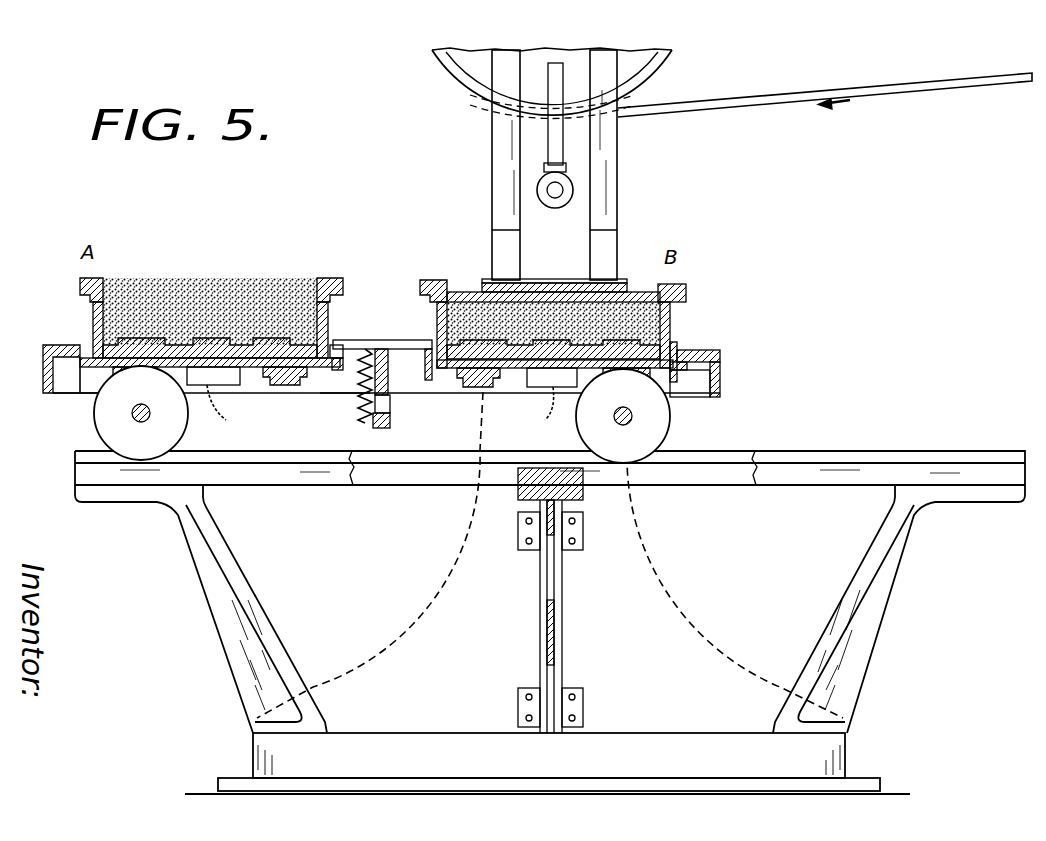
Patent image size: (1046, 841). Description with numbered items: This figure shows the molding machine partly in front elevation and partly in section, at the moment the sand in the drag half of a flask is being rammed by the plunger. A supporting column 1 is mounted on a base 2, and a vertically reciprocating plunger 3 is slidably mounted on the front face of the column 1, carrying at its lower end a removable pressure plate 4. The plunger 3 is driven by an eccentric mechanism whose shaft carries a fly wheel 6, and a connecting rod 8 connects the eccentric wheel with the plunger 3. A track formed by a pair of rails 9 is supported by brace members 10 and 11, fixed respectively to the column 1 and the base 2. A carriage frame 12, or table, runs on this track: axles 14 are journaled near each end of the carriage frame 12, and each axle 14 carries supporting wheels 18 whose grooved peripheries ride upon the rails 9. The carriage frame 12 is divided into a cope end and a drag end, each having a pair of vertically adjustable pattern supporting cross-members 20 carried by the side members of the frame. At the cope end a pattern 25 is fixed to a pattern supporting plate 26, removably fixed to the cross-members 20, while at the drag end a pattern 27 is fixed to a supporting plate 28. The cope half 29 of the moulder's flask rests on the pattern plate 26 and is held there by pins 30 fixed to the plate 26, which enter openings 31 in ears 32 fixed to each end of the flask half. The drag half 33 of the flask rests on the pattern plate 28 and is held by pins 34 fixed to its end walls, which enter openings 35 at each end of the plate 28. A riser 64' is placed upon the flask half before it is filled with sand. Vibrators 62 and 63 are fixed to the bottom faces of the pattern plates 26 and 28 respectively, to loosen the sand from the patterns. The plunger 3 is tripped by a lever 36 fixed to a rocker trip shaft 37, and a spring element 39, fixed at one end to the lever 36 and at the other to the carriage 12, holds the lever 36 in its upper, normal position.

The supporting column 1 is at (550, 555).
The base 2 is at (547, 763).
The plunger 3 is at (554, 165).
The pressure plate 4 is at (634, 290).
The fly wheel 6 is at (470, 60).
The connecting rod 8 is at (556, 141).
The rails 9 is at (735, 487).
The supporting brace member 10 is at (556, 609).
The supporting brace member 11 is at (255, 606).
The carriage frame 12 is at (42, 378).
The axle 14 is at (131, 413).
The supporting wheel 18 is at (382, 414).
The pattern plate supporting cross-member 20 is at (140, 379).
The pattern 25 is at (208, 343).
The pattern supporting plate 26 is at (243, 368).
The pattern 27 is at (468, 368).
The supporting plate 28 is at (522, 362).
The cope half of moulder's flask 29 is at (90, 310).
The pins 30 is at (87, 353).
The openings 31 is at (80, 345).
The ears 32 is at (211, 384).
The drag half of moulder's flask 33 is at (672, 318).
The pins 34 is at (380, 346).
The openings 35 is at (570, 369).
The lever 36 is at (381, 430).
The rocker trip shaft 37 is at (389, 339).
The spring element 39 is at (360, 406).
The vibrator 62 is at (200, 387).
The vibrator 63 is at (566, 388).
The riser 64' is at (501, 273).